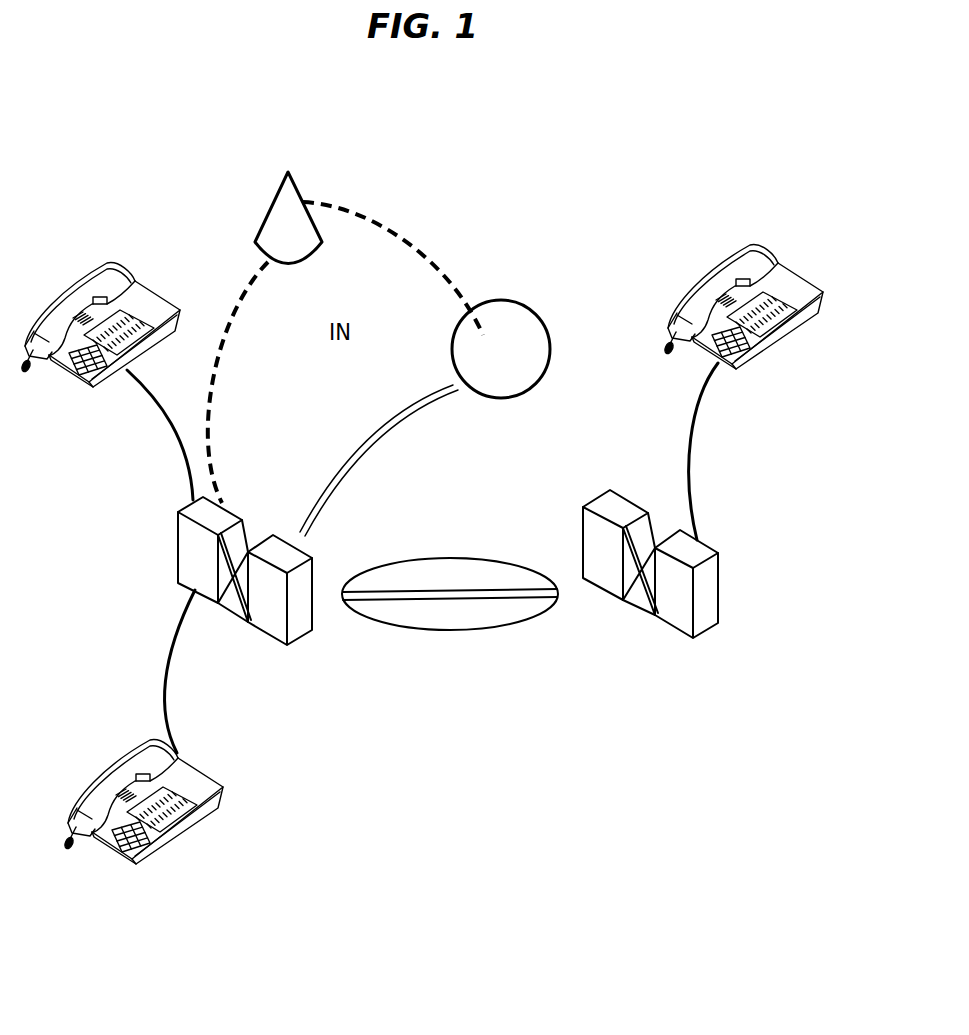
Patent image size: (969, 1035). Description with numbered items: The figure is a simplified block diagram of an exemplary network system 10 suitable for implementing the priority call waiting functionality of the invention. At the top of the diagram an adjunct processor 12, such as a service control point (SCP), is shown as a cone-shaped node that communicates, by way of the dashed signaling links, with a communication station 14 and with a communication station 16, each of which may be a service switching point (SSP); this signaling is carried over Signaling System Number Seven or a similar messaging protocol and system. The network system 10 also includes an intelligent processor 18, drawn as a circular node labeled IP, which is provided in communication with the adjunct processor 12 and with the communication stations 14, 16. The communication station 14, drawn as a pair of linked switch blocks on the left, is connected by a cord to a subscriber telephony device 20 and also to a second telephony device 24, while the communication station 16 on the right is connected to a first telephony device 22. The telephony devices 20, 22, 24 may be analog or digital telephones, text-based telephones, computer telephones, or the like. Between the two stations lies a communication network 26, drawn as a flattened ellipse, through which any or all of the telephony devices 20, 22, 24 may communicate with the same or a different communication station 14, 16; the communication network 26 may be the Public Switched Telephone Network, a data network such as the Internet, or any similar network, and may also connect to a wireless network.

The network system 10 is at (633, 135).
The adjunct processor 12 is at (268, 213).
The communication station 14 is at (260, 633).
The communication station 16 is at (623, 495).
The intelligent processor 18 is at (530, 310).
The subscriber telephony device 20 is at (155, 292).
The first telephony device 22 is at (802, 273).
The second telephony device 24 is at (188, 758).
The communication network 26 is at (443, 630).